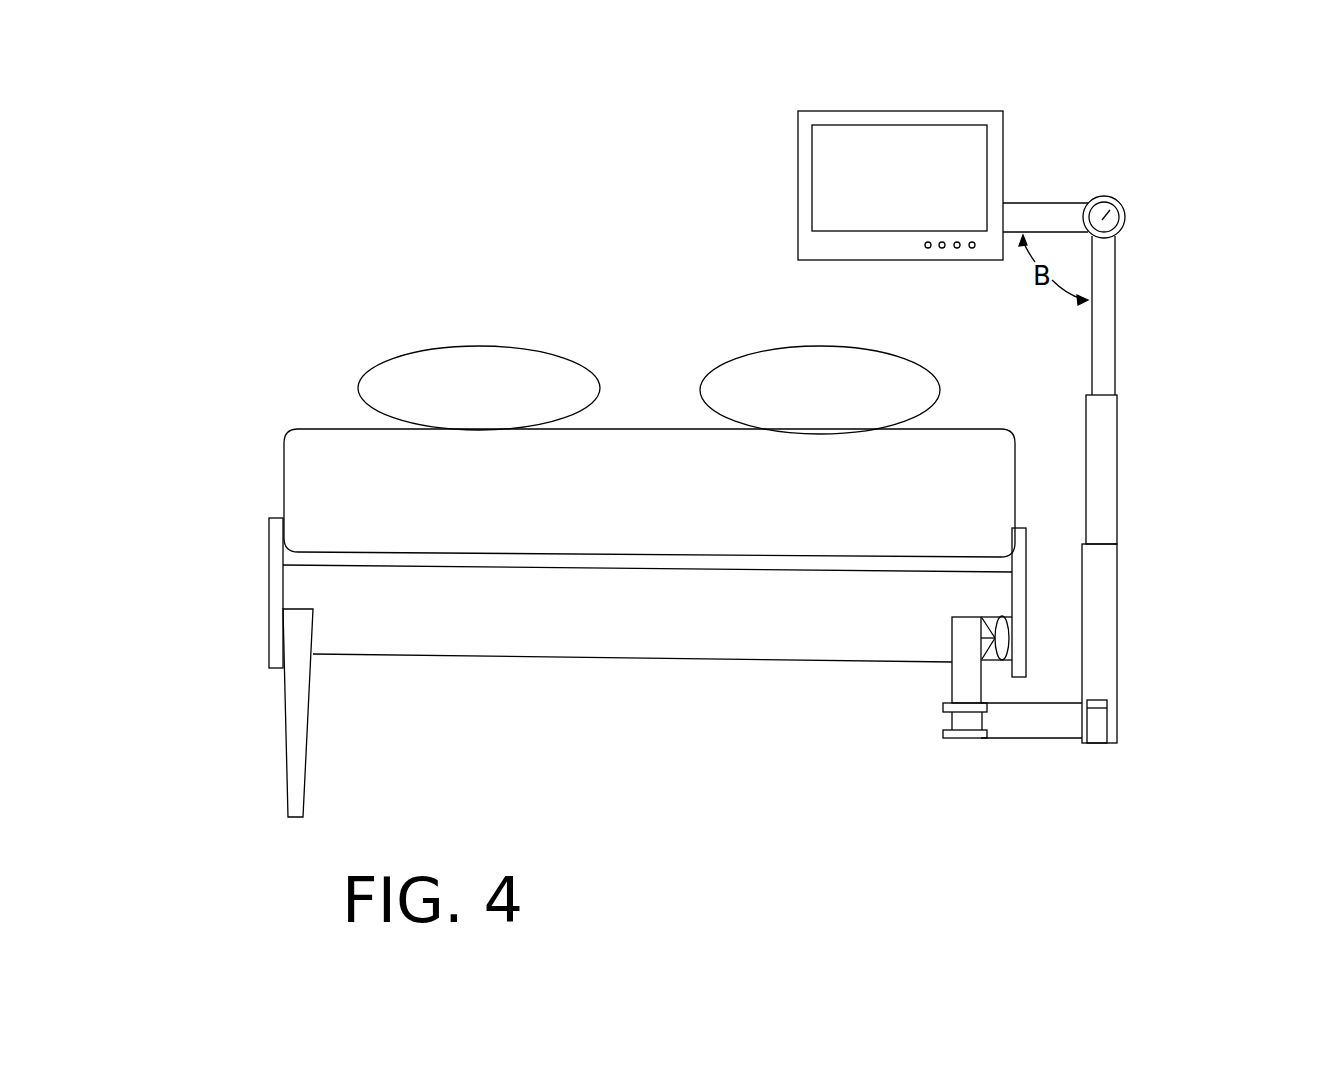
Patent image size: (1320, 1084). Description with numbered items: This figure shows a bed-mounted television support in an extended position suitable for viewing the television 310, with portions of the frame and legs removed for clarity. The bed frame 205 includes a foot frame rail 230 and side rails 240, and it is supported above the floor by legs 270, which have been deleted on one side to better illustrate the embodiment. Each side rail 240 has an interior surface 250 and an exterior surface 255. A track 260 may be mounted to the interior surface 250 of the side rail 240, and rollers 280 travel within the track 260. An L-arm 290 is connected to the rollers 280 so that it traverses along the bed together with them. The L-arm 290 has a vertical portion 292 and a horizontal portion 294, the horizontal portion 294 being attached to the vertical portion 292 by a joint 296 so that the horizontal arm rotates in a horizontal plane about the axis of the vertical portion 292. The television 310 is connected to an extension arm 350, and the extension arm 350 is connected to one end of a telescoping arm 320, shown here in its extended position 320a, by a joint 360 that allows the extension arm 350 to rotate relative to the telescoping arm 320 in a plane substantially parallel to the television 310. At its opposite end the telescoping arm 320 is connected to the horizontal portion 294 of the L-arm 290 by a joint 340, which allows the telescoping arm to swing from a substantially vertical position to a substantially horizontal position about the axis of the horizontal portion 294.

The bed frame 205 is at (514, 735).
The foot frame rail 230 is at (603, 658).
The side rails 240 is at (269, 580).
The interior surface 250 is at (1010, 600).
The exterior surface 255 is at (1027, 557).
The track 260 is at (1004, 662).
The legs 270 is at (312, 727).
The rollers 280 is at (1010, 634).
The L-arm 290 is at (912, 721).
The vertical portion 292 is at (967, 676).
The horizontal portion 294 is at (1040, 720).
The joint 296 is at (965, 722).
The television 310 is at (870, 111).
The telescoping arm 320 is at (1100, 556).
The extended position 320a is at (1118, 424).
The joint 340 is at (1100, 722).
The extension arm 350 is at (1046, 203).
The joint 360 is at (1116, 204).